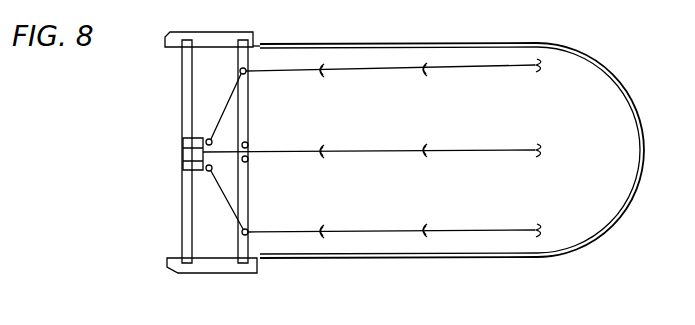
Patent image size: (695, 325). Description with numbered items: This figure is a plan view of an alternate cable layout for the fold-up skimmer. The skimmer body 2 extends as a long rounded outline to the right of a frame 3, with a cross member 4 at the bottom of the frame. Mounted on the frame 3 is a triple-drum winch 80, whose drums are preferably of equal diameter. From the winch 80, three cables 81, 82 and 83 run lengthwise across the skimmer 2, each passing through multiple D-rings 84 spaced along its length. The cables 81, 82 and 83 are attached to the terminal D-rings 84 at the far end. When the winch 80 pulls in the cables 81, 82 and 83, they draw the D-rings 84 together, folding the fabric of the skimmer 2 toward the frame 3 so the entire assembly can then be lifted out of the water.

The racket head frame 2 is at (605, 202).
The frame 3 is at (182, 214).
The bottom cross bar 4 is at (198, 277).
The triple-drum winch 80 is at (183, 152).
The cable 81 is at (364, 74).
The cable 82 is at (358, 153).
The cable 83 is at (397, 232).
The D-rings 84 is at (533, 146).